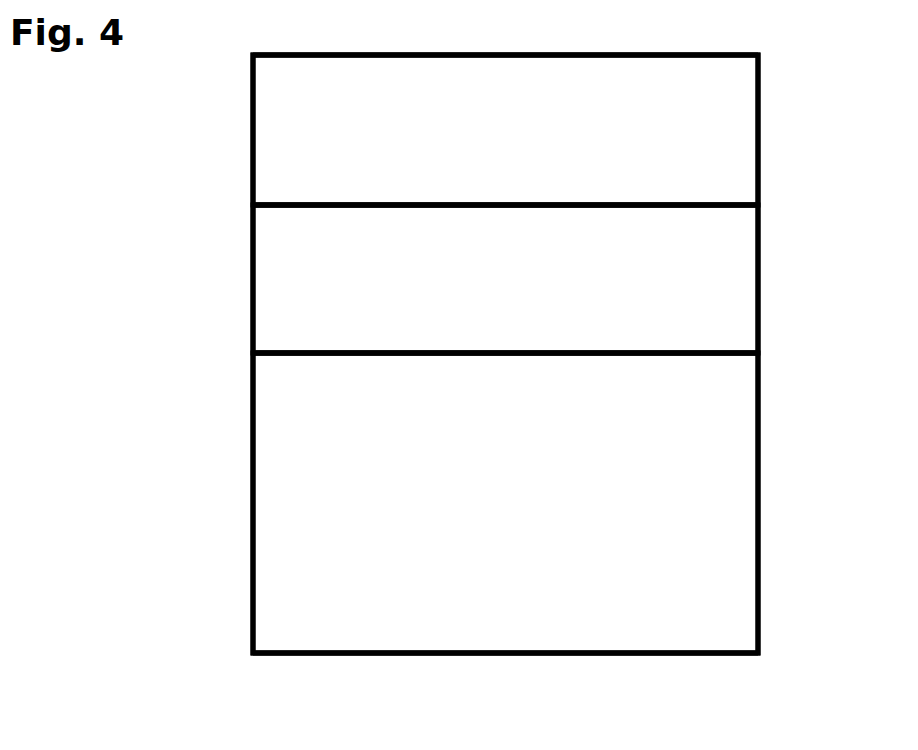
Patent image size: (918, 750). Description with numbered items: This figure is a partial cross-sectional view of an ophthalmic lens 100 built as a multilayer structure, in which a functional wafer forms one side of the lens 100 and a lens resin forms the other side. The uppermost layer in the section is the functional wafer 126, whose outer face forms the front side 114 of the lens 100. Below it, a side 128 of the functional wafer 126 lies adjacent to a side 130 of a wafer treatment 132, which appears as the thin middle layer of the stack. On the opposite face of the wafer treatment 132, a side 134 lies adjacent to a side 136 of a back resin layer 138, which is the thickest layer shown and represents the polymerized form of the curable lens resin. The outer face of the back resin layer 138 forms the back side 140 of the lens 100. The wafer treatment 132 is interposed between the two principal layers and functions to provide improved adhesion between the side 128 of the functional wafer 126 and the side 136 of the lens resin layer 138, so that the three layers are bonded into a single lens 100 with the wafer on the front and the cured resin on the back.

The lens 100 is at (813, 100).
The front side 114 is at (500, 53).
The functional wafer 126 is at (760, 155).
The side of functional wafer 128 is at (583, 203).
The side of wafer treatment 130 is at (498, 208).
The wafer treatment 132 is at (760, 278).
The side of wafer treatment 134 is at (595, 350).
The side of back resin layer 136 is at (520, 357).
The back resin layer 138 is at (760, 460).
The back side 140 is at (512, 657).